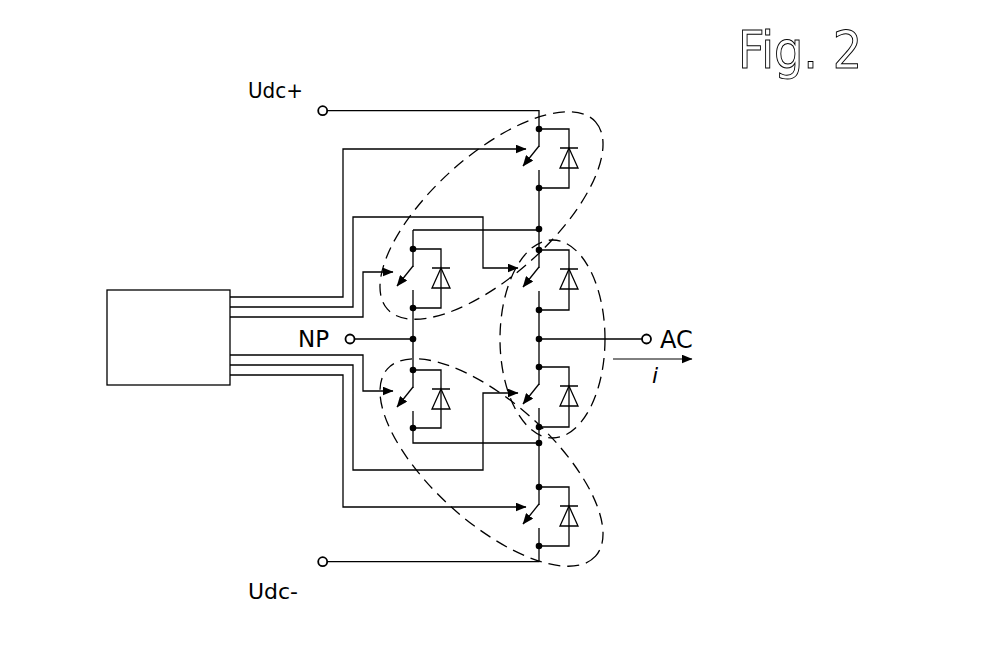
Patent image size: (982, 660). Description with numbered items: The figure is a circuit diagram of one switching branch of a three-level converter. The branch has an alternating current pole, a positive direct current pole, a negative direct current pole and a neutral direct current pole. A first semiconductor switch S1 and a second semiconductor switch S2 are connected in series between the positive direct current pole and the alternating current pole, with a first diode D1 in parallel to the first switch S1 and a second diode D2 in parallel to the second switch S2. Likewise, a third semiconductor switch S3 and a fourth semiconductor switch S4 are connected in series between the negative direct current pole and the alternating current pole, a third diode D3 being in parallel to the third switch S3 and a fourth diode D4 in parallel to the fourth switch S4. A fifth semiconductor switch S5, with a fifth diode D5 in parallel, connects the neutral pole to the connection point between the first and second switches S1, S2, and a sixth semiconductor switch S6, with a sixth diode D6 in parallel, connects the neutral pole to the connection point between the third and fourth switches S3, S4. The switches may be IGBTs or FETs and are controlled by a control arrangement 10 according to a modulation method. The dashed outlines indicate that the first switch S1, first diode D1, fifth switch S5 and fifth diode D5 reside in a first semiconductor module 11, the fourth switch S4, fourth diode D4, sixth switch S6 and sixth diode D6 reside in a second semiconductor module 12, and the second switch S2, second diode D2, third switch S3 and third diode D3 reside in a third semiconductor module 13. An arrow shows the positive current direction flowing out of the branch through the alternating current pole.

The control arrangement 10 is at (170, 290).
The first switching branch-specific semiconductor module 11 is at (602, 137).
The second switching branch-specific semiconductor module 12 is at (602, 533).
The third switching branch-specific semiconductor module 13 is at (602, 303).
The first semiconductor switch S1 is at (526, 158).
The second semiconductor switch S2 is at (525, 280).
The third semiconductor switch S3 is at (525, 397).
The fourth semiconductor switch S4 is at (526, 516).
The fifth semiconductor switch S5 is at (398, 279).
The sixth semiconductor switch S6 is at (399, 399).
The first diode D1 is at (569, 158).
The second diode D2 is at (568, 283).
The third diode D3 is at (568, 395).
The fourth diode D4 is at (570, 518).
The fifth diode D5 is at (441, 278).
The sixth diode D6 is at (442, 401).